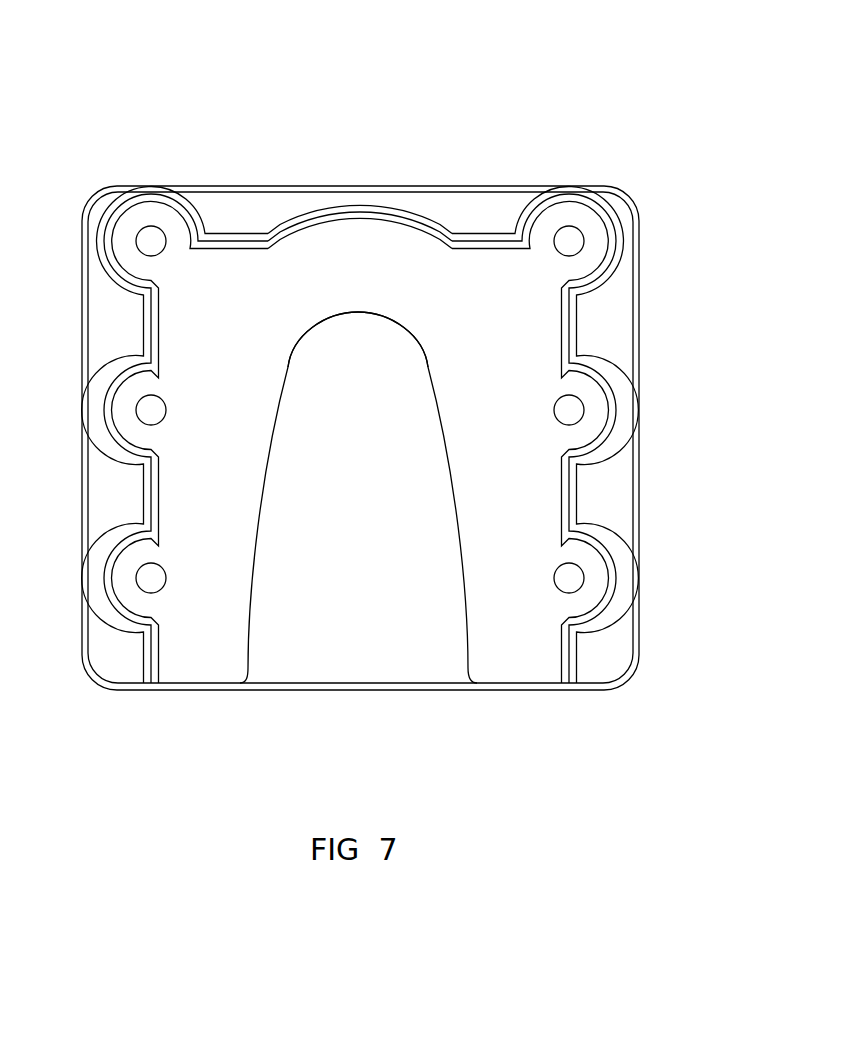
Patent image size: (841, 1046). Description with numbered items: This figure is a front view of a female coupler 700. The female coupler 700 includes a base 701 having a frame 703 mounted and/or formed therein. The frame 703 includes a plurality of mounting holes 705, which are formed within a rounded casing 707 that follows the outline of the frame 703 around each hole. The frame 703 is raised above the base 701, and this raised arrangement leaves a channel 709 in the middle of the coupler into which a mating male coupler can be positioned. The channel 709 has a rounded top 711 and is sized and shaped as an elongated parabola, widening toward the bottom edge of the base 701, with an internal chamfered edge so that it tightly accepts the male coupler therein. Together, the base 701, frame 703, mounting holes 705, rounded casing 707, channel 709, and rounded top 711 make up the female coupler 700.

The female coupler 700 is at (441, 379).
The base 701 is at (602, 518).
The frame 703 is at (490, 290).
The mounting holes 705 is at (151, 241).
The rounded casing 707 is at (112, 228).
The channel 709 is at (350, 534).
The rounded top 711 is at (358, 318).